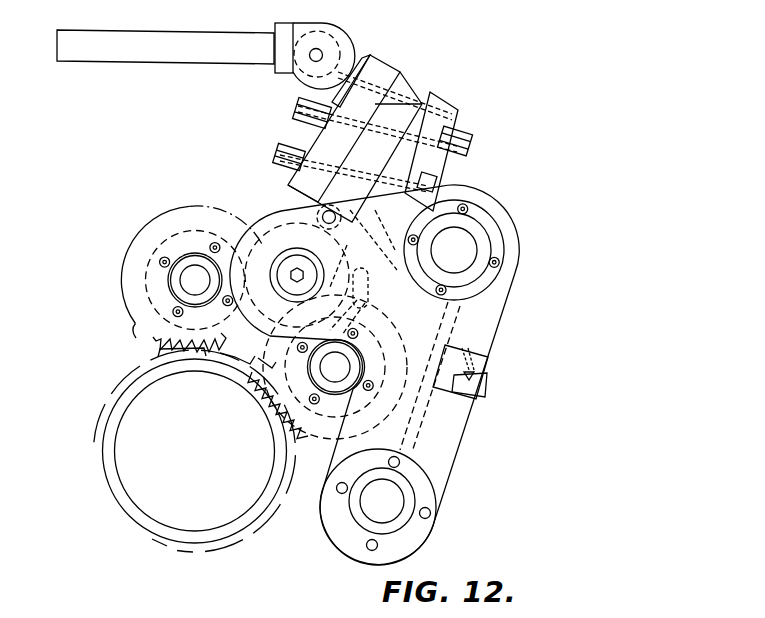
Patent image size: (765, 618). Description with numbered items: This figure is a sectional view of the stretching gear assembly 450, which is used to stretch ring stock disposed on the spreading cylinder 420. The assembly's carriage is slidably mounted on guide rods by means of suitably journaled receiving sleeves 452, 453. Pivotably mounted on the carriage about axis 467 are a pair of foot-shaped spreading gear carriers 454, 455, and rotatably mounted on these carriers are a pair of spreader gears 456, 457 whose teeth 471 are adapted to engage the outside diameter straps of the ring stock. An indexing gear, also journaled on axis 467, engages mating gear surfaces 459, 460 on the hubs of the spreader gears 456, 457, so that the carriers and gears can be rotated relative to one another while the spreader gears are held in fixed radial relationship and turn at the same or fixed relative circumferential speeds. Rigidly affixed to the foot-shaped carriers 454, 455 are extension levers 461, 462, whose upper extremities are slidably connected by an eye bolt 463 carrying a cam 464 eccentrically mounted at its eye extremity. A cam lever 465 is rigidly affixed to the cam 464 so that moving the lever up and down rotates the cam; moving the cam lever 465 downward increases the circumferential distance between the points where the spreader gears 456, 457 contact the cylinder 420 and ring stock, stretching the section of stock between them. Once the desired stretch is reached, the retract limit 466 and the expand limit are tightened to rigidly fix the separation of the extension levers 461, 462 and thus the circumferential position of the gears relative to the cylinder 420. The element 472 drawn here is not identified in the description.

The cylinder 420 is at (120, 507).
The stretching gear assembly 450 is at (517, 263).
The receiving sleeve 452 is at (472, 240).
The receiving sleeve 453 is at (402, 532).
The foot-shaped spreading gear carrier 454 is at (222, 222).
The foot-shaped spreading gear carrier 455 is at (373, 302).
The spreader gear 456 is at (200, 197).
The spreader gear 457 is at (338, 430).
The mating gear surface 459 is at (146, 281).
The mating gear surface 460 is at (371, 292).
The extension lever 461 is at (378, 60).
The extension lever 462 is at (460, 104).
The eye bolt 463 is at (409, 87).
The cam 464 is at (343, 30).
The cam lever 465 is at (386, 136).
The retract limit 466 is at (284, 151).
The axis 467 is at (297, 273).
The teeth 471 is at (153, 337).
The gear segment 472 is at (160, 350).